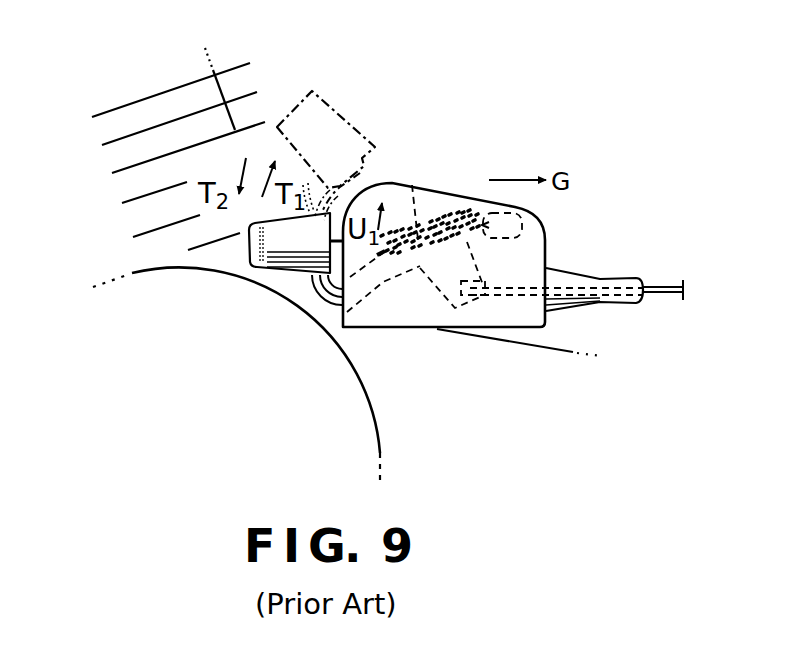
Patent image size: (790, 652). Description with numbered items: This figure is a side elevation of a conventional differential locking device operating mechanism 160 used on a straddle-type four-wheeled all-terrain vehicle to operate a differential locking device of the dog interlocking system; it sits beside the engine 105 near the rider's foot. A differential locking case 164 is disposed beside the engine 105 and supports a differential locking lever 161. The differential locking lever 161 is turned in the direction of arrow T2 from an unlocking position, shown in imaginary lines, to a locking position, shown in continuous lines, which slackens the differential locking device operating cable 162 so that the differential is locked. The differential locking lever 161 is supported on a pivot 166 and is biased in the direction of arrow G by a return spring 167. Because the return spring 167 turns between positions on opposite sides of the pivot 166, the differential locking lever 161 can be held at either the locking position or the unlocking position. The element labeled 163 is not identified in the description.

The engine 105 is at (250, 433).
The differential locking device operating mechanism 160 is at (506, 154).
The differential locking lever 161 is at (323, 104).
The differential locking device operating cable 162 is at (668, 297).
The tapered holder 163 is at (584, 263).
The differential locking case 164 is at (389, 329).
The pivot 166 is at (440, 212).
The return spring 167 is at (412, 185).